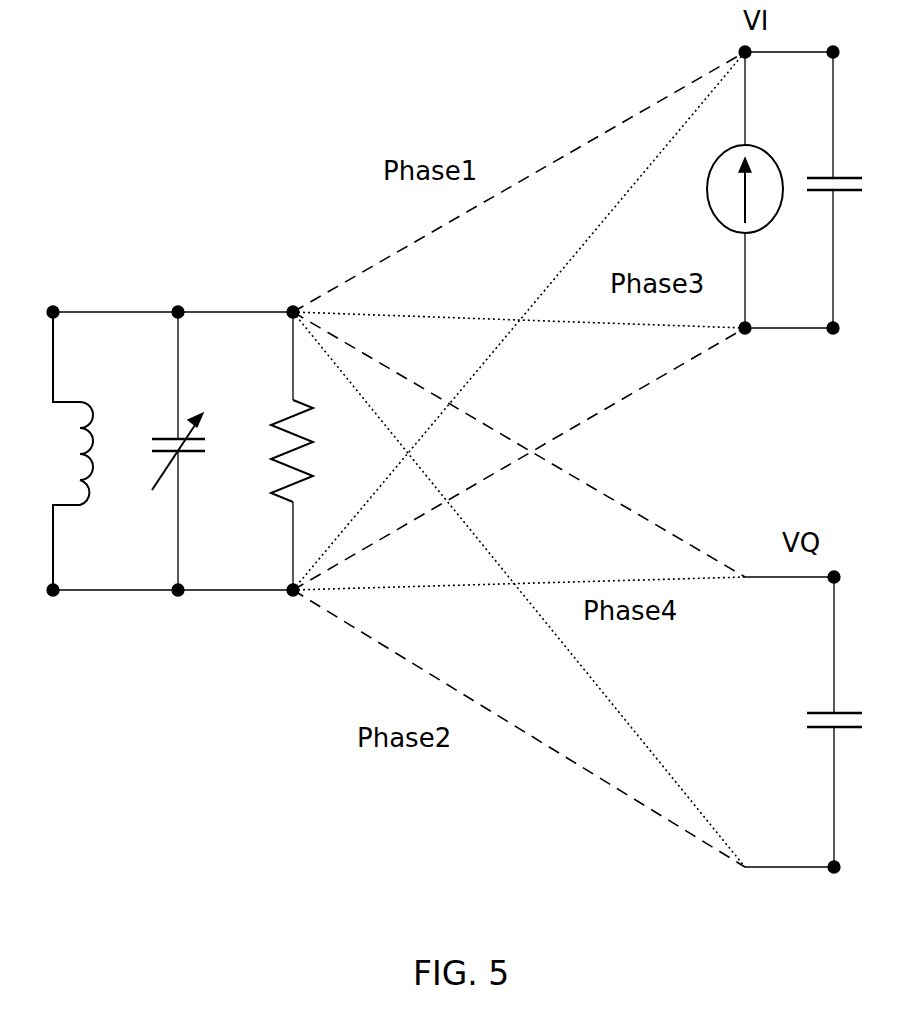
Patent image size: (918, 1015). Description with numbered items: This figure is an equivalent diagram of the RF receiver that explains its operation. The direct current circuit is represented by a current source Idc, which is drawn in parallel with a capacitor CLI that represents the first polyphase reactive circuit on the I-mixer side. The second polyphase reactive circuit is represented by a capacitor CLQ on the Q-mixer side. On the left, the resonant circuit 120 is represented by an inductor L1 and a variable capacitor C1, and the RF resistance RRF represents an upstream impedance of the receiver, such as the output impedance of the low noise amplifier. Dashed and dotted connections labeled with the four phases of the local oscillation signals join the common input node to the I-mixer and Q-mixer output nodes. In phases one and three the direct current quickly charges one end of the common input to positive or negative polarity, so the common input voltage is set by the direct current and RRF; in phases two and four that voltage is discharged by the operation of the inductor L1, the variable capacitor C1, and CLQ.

The resonant circuit 120 is at (136, 677).
The inductor L1 is at (58, 451).
The variable capacitor C1 is at (198, 451).
The RF resistance RRF is at (318, 451).
The current source Idc is at (757, 190).
The capacitor CLI is at (846, 190).
The capacitor CLQ is at (852, 722).